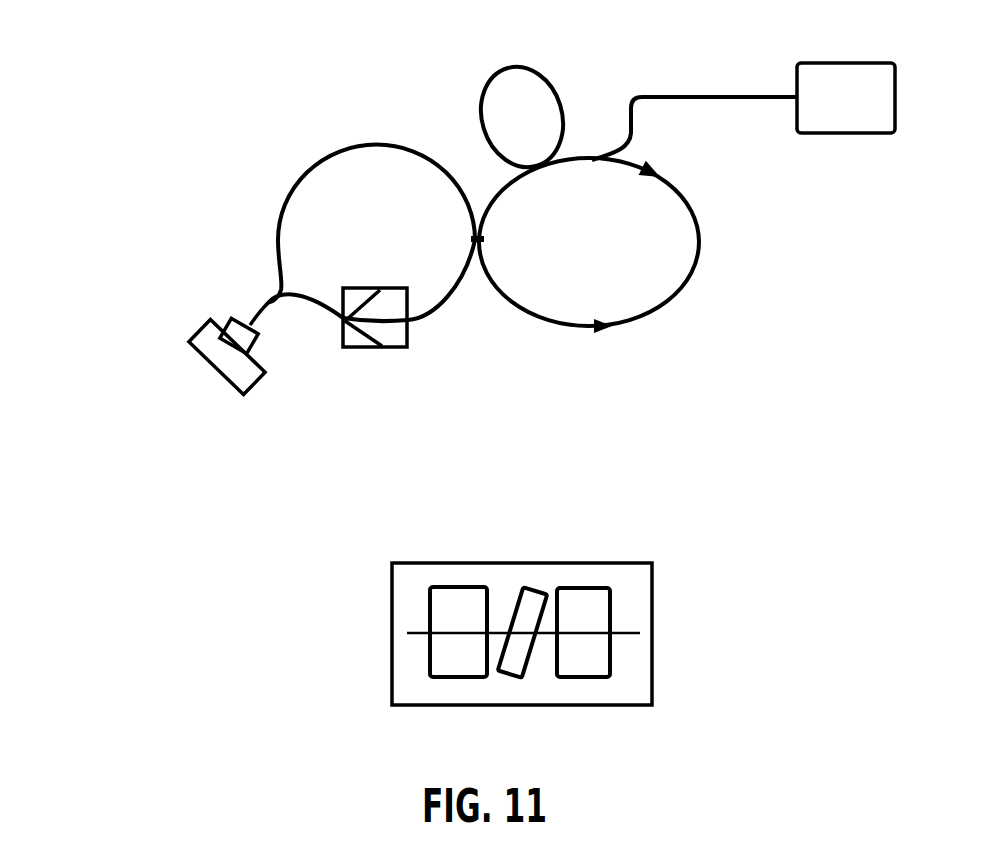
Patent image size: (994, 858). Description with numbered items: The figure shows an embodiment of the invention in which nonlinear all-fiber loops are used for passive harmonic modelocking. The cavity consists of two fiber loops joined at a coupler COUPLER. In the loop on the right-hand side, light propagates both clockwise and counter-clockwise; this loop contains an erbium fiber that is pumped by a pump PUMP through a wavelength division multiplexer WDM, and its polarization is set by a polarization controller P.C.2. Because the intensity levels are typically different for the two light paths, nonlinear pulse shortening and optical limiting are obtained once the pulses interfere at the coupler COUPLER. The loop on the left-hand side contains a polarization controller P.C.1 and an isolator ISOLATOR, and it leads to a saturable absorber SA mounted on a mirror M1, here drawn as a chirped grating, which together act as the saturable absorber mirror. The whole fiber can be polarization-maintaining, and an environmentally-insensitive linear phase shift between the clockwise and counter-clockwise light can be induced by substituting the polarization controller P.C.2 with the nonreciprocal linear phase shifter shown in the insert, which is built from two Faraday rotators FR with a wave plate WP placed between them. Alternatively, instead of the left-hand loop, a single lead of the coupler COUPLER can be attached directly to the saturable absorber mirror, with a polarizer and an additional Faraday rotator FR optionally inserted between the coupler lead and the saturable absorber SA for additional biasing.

The polarization controller P.C.1 is at (372, 233).
The polarization controller P.C.2 is at (622, 245).
The coupler COUPLER is at (480, 250).
The saturable absorber SA is at (261, 340).
The mirror M1 is at (222, 361).
The isolator ISOLATOR is at (353, 358).
The wavelength division multiplexer WDM is at (633, 117).
The pump PUMP is at (846, 98).
The Faraday rotator FR is at (520, 632).
The wave plate WP is at (508, 682).